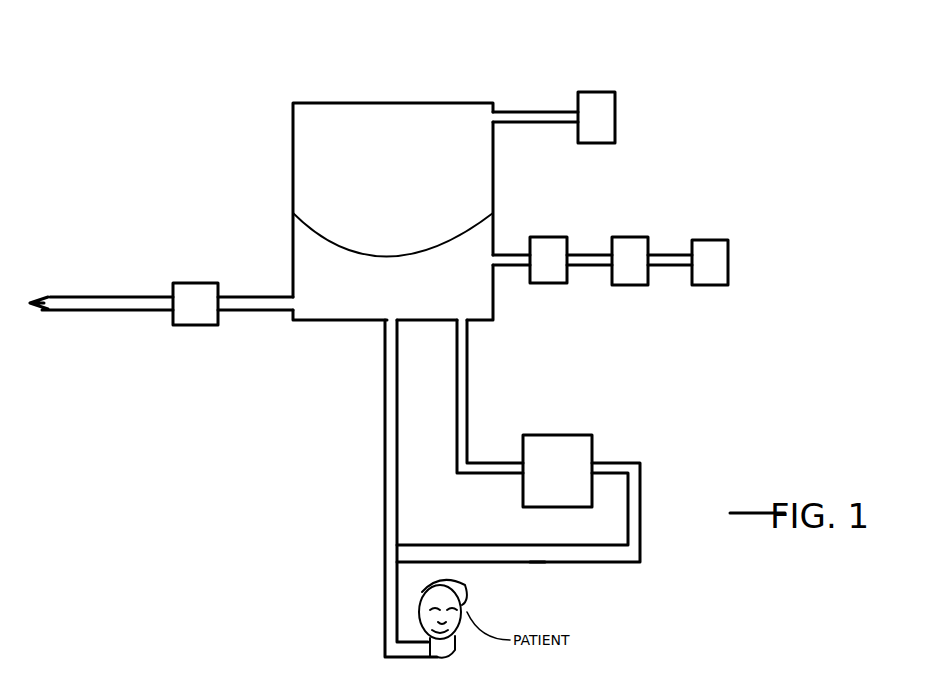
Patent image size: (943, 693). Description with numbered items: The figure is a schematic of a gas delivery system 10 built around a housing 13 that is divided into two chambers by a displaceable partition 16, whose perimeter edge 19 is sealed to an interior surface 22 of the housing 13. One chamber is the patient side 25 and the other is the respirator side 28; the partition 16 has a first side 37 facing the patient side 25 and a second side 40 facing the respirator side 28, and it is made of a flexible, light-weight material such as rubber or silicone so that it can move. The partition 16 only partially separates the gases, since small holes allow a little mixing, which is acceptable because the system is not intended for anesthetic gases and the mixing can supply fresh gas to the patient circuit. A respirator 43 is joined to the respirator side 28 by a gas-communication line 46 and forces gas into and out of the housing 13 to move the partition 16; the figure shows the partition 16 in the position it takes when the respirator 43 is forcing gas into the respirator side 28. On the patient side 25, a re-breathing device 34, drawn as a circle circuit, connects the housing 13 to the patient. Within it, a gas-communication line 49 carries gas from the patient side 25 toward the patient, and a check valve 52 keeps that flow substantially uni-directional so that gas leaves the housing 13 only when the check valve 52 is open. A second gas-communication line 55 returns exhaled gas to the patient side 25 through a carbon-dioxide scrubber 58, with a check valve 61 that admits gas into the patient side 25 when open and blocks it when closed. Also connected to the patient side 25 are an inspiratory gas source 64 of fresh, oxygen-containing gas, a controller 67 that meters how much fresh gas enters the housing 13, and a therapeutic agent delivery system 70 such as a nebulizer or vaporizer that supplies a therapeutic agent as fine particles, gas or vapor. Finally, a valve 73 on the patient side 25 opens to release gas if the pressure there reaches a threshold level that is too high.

The gas delivery system 10 is at (194, 208).
The housing 13 is at (480, 100).
The displaceable partition 16 is at (437, 247).
The perimeter edge 19 is at (306, 204).
The interior surface 22 is at (296, 150).
The patient side 25 is at (348, 289).
The respirator side 28 is at (400, 155).
The re-breathing device 34 is at (306, 524).
The first side 37 is at (393, 271).
The second side 40 is at (381, 240).
The respirator 43 is at (615, 100).
The gas-communication line 46 is at (548, 112).
The gas-communication line 49 is at (385, 412).
The check valve 52 is at (397, 466).
The gas-communication line 55 is at (640, 480).
The carbon-dioxide scrubber 58 is at (570, 435).
The check valve 61 is at (538, 547).
The inspiratory gas source 64 is at (712, 285).
The controller 67 is at (628, 285).
The therapeutic agent delivery system 70 is at (550, 283).
The valve 73 is at (200, 325).